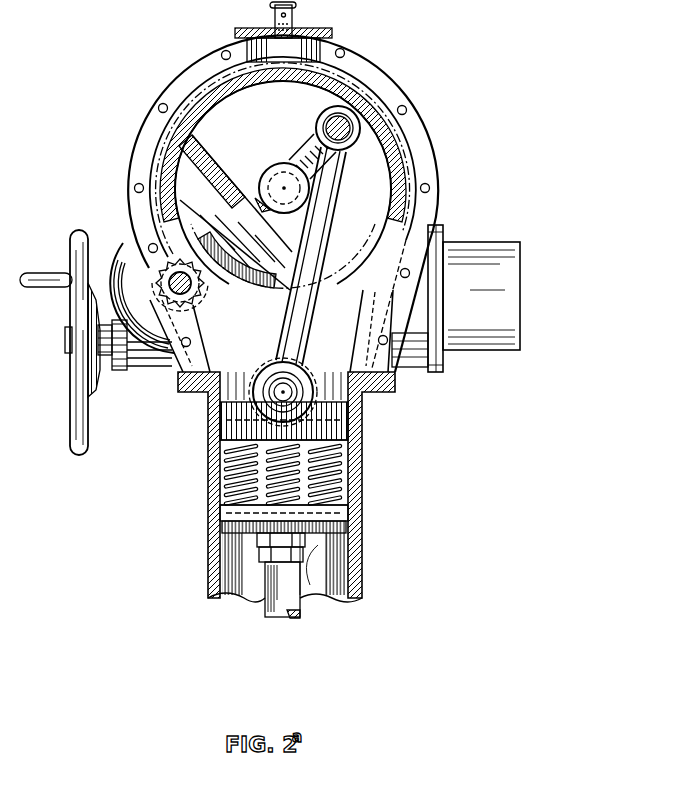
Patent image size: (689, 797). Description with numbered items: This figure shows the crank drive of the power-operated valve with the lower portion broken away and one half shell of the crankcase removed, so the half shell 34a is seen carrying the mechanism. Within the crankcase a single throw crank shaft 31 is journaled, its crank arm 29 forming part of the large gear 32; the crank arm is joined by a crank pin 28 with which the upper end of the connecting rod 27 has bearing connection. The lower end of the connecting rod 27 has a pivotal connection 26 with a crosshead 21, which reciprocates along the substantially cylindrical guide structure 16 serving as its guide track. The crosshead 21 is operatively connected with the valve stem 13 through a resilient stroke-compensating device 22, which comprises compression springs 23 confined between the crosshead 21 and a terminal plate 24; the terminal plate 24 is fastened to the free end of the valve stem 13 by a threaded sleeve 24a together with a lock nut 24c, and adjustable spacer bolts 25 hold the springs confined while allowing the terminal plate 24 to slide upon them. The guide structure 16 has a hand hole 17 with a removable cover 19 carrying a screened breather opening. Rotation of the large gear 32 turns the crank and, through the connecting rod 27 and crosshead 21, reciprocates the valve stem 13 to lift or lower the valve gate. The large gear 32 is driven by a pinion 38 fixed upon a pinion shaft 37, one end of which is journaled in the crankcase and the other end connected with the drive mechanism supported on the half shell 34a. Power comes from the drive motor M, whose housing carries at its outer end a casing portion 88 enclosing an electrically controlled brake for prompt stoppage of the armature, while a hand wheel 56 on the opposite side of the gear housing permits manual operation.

The half shell 34a is at (178, 77).
The crank arm 29 is at (303, 142).
The single throw crank shaft 31 is at (278, 181).
The crank pin 28 is at (345, 130).
The pinion 38 is at (176, 262).
The pinion shaft 37 is at (170, 284).
The casing portion 88 is at (466, 252).
The large gear 32 is at (277, 233).
The connecting rod 27 is at (305, 326).
The hand wheel 56 is at (73, 378).
The drive motor M is at (405, 367).
The pivotal connection 26 is at (300, 388).
The crosshead 21 is at (260, 428).
The cylindrical guide structure 16 is at (210, 462).
The adjustable spacer bolt 25 is at (235, 478).
The compression spring 23 is at (318, 462).
The resilient stroke-compensating device 22 is at (333, 487).
The terminal plate 24 is at (250, 511).
The threaded sleeve 24a is at (265, 537).
The lock nut 24c is at (262, 552).
The valve stem 13 is at (268, 595).
The hand hole 17 is at (243, 592).
The removable cover 19 is at (312, 585).